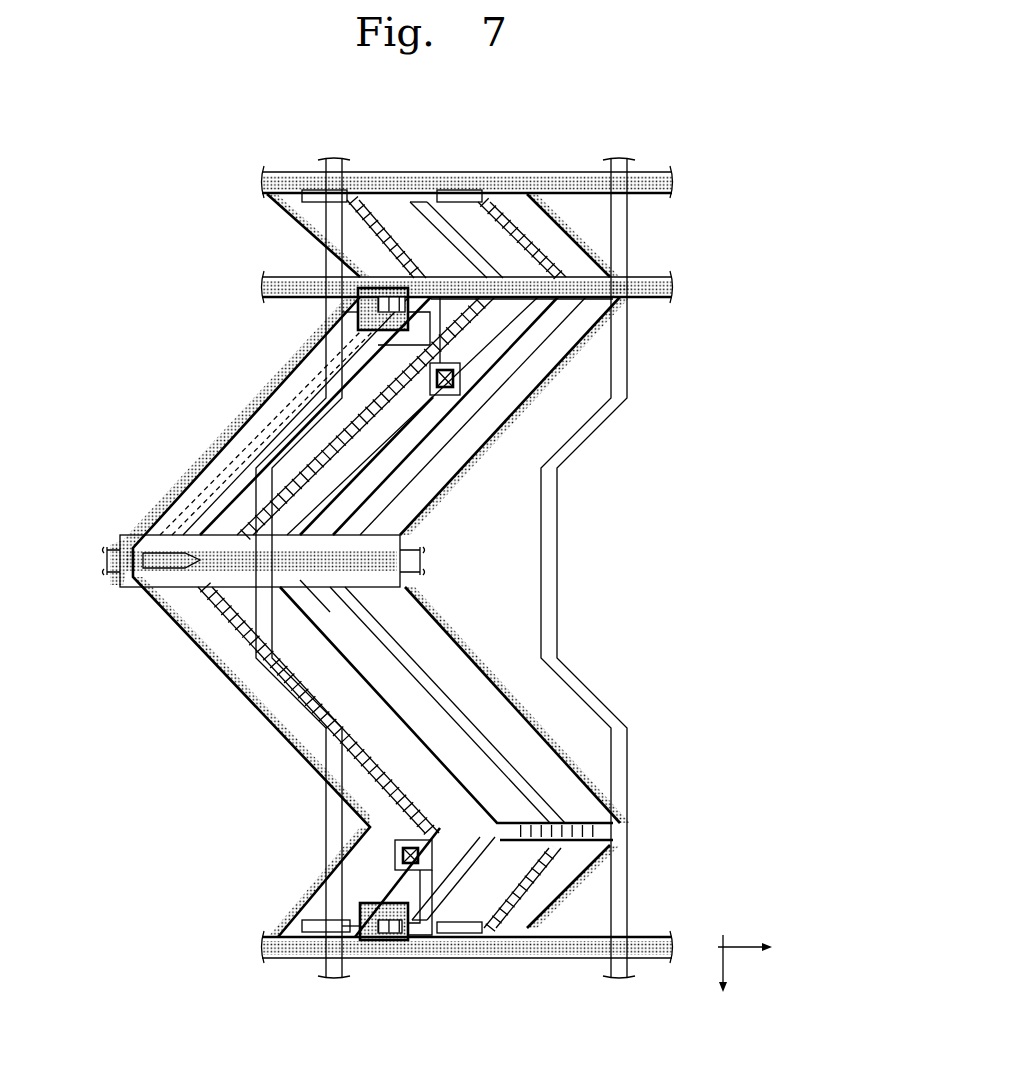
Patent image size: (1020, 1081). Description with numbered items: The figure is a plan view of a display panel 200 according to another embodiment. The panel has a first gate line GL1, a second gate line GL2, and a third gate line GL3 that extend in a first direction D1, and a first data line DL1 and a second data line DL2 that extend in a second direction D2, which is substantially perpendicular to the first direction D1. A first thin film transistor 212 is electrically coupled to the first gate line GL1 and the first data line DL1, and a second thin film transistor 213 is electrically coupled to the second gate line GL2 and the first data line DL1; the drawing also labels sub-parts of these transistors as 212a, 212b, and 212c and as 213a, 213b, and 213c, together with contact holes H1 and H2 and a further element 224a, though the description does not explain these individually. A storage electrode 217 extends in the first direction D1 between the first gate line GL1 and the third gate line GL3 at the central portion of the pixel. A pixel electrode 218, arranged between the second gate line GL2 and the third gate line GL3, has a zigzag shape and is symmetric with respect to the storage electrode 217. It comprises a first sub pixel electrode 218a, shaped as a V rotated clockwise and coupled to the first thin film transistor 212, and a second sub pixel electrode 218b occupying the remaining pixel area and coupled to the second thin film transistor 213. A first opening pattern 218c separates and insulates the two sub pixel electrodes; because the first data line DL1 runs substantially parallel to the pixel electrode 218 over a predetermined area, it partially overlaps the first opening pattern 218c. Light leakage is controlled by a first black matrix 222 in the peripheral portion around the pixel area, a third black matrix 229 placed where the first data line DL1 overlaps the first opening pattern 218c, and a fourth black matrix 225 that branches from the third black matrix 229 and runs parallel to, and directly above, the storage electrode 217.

The display panel 200 is at (586, 122).
The third gate line GL3 is at (262, 184).
The first gate line GL1 is at (262, 288).
The second gate line GL2 is at (262, 950).
The first data line DL1 is at (334, 978).
The second data line DL2 is at (621, 978).
The first thin film transistor 212 is at (183, 315).
The first gate electrode 212a is at (392, 312).
The first source electrode 212b is at (380, 300).
The first drain electrode 212c is at (408, 342).
The second thin film transistor 213 is at (200, 815).
The second gate electrode 213a is at (384, 890).
The second source electrode 213b is at (362, 912).
The second drain electrode 213c is at (396, 860).
The first contact hole H1 is at (428, 404).
The second contact hole H2 is at (397, 834).
The storage electrode 217 is at (130, 590).
The fourth black matrix 225 is at (178, 585).
The third black matrix 229 is at (240, 605).
The first black matrix 222 is at (242, 708).
The pixel electrode 218 is at (705, 595).
The first sub pixel electrode 218a is at (395, 735).
The second sub pixel electrode 218b is at (380, 690).
The first opening pattern 218c is at (398, 730).
The second pixel electrode portion 224a is at (525, 872).
The first direction D1 is at (759, 944).
The second direction D2 is at (725, 976).